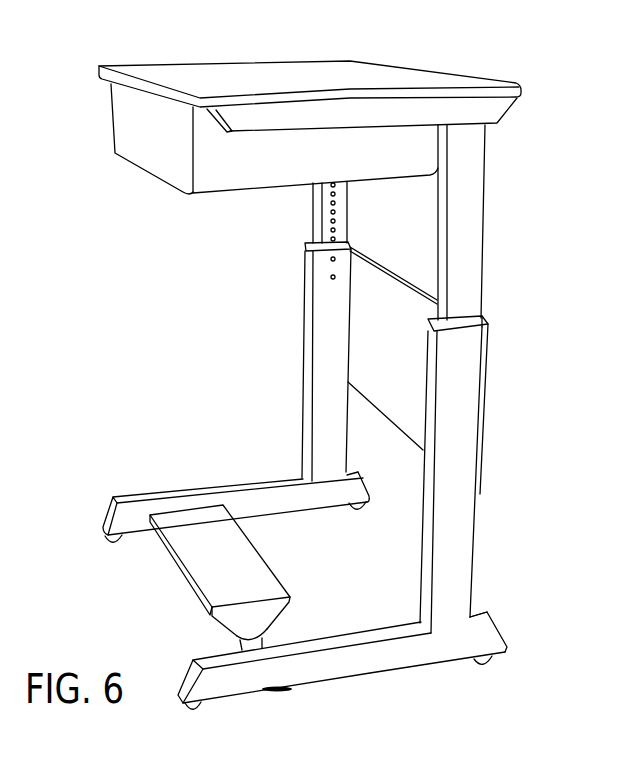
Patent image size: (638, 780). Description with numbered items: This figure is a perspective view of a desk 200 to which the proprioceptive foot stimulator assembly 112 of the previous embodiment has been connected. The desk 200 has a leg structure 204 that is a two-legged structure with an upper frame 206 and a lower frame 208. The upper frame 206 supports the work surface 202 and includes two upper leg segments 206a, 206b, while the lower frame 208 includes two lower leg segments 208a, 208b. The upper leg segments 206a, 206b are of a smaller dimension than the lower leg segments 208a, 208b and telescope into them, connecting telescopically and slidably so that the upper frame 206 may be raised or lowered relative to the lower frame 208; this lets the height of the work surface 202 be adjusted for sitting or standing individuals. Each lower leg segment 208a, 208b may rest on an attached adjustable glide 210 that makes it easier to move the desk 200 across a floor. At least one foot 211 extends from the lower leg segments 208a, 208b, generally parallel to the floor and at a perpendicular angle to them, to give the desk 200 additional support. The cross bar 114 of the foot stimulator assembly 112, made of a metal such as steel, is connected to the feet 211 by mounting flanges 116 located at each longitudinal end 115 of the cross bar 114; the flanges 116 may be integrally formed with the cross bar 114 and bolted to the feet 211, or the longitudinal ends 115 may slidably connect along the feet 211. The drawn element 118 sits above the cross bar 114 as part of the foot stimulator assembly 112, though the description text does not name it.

The desk 200 is at (461, 47).
The work surface 202 is at (265, 75).
The leg structure 204 is at (523, 416).
The upper frame 206 is at (461, 240).
The upper leg segment 206a is at (325, 210).
The upper leg segment 206b is at (465, 192).
The lower frame 208 is at (457, 529).
The lower leg segment 208a is at (333, 372).
The lower leg segment 208b is at (455, 575).
The adjustable glide 210 is at (116, 550).
The foot 211 is at (263, 493).
The proprioceptive foot stimulator assembly 112 is at (145, 594).
The cross bar 114 is at (277, 633).
The longitudinal end 115 is at (235, 646).
The mounting flange 116 is at (273, 692).
The footrest pad 118 is at (233, 567).